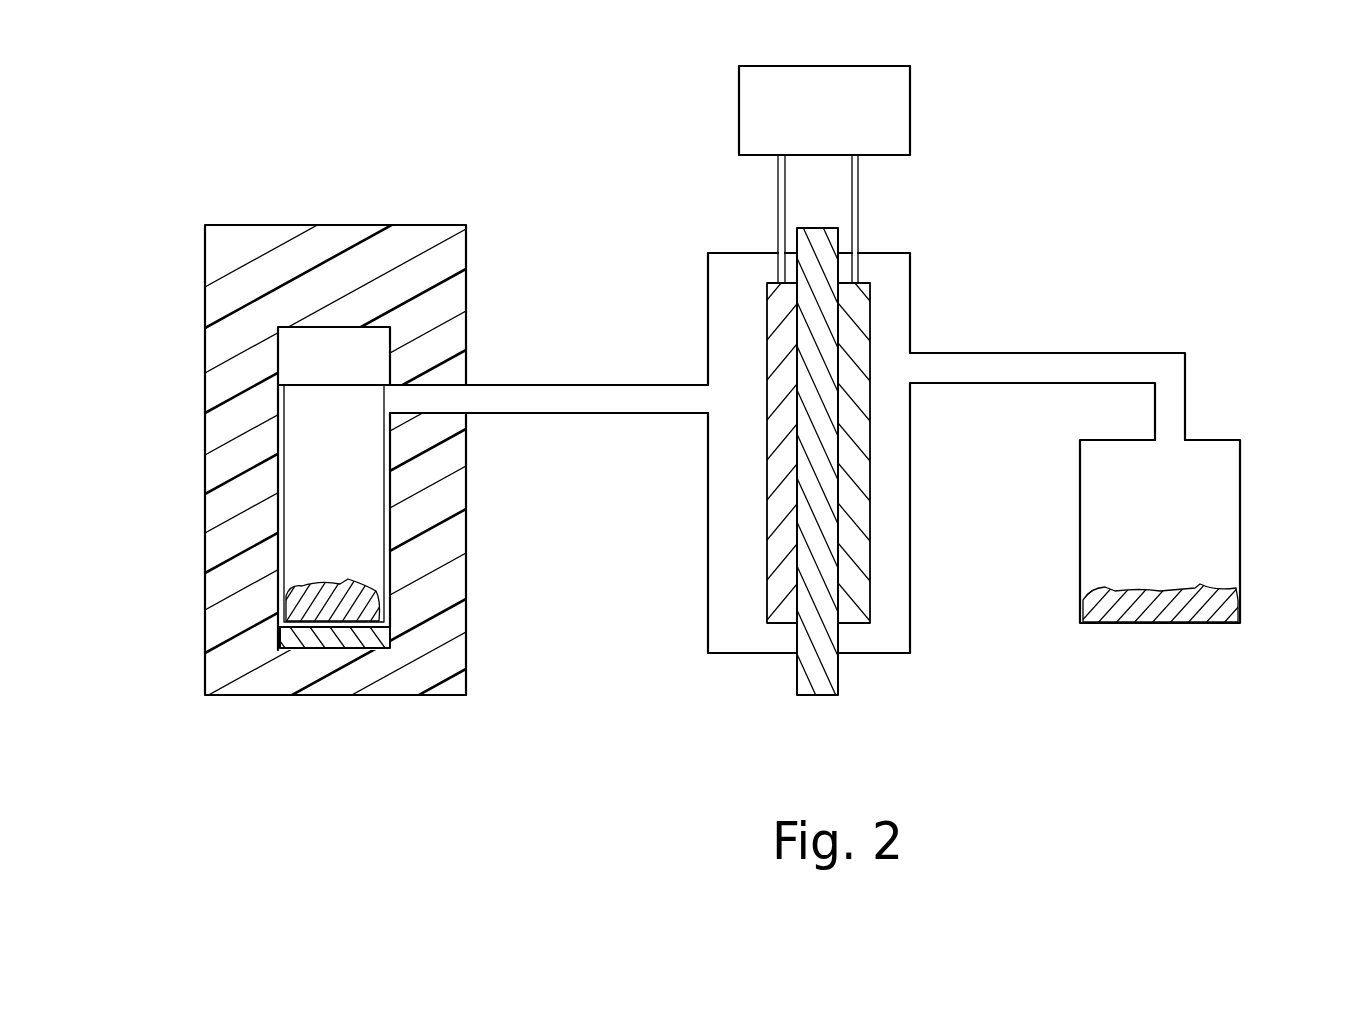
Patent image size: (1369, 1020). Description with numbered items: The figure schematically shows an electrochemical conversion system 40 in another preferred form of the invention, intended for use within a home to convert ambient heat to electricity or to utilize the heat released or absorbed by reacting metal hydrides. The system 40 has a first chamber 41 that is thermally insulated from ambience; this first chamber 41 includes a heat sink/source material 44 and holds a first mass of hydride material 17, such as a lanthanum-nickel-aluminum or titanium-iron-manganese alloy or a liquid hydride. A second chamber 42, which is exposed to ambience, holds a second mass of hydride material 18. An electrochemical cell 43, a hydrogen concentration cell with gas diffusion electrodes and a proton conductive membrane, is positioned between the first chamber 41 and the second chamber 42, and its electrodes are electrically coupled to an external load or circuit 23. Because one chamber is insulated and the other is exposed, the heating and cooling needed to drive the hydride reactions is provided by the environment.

The electrochemical conversion system 40 is at (291, 102).
The first chamber 41 is at (354, 444).
The first mass of hydride material 17 is at (370, 588).
The heat sink/source material 44 is at (282, 638).
The external load or circuit 23 is at (907, 104).
The electrochemical cell 43 is at (886, 497).
The second chamber 42 is at (1224, 488).
The second mass of hydride material 18 is at (1212, 598).